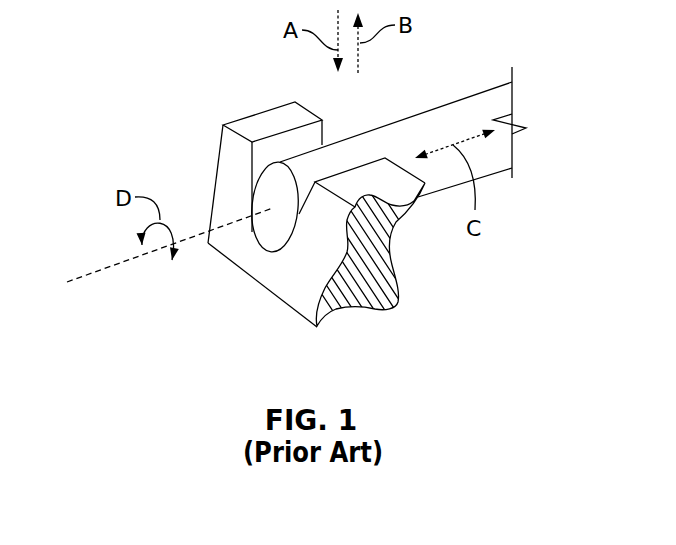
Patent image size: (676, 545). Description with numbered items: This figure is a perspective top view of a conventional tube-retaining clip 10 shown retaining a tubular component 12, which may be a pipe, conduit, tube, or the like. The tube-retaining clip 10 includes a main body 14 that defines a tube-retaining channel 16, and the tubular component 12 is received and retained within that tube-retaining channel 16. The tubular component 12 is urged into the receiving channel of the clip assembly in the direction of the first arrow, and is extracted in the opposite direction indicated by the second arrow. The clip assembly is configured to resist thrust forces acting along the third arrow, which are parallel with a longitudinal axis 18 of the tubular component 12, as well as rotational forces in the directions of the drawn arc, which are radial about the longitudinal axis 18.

The tube-retaining clip 10 is at (312, 255).
The tubular component 12 is at (455, 115).
The main body 14 is at (242, 127).
The tube-retaining channel 16 is at (288, 150).
The longitudinal axis 18 is at (140, 255).